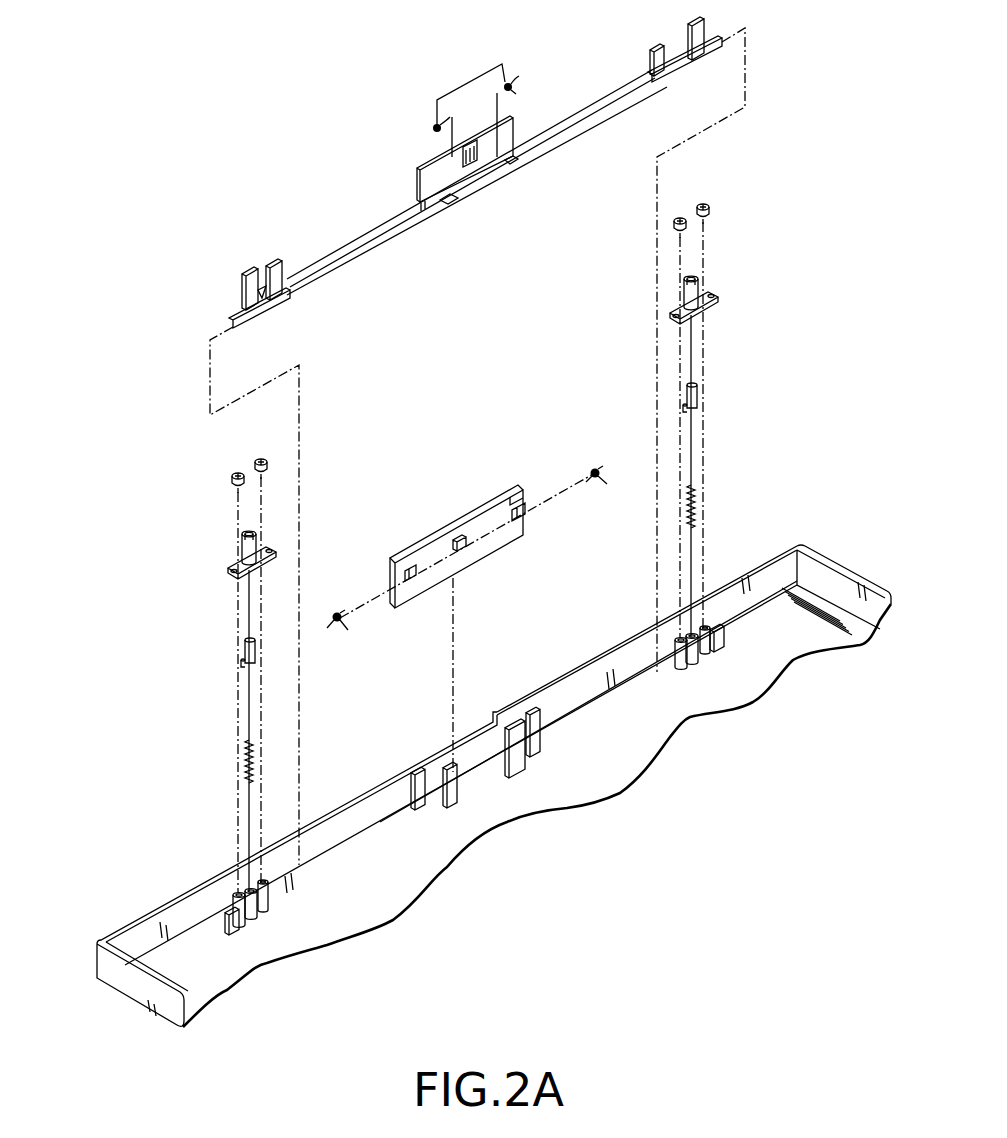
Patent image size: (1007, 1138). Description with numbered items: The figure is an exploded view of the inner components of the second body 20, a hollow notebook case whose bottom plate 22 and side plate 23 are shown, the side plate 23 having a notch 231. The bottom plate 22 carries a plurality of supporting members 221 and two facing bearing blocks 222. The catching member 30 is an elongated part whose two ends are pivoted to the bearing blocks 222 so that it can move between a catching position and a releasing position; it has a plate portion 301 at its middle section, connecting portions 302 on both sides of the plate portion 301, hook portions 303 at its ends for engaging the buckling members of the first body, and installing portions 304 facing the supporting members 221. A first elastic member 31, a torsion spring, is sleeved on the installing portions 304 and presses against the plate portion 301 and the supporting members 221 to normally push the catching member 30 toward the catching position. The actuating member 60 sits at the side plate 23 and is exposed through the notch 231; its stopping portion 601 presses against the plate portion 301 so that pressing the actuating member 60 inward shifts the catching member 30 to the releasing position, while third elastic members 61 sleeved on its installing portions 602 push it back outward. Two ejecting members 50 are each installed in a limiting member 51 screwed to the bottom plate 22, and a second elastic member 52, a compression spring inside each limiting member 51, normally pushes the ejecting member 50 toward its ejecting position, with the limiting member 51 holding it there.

The second body 20 is at (143, 1015).
The bottom plate 22 is at (332, 929).
The side plate 23 is at (158, 914).
The supporting members 221 is at (421, 806).
The bearing blocks 222 is at (229, 920).
The notch 231 is at (432, 758).
The catching member 30 is at (623, 81).
The plate portion 301 is at (433, 172).
The connecting portions 302 is at (349, 240).
The hook portions 303 is at (255, 277).
The installing portions 304 is at (513, 158).
The first elastic member 31 is at (470, 80).
The ejecting member 50 is at (241, 645).
The limiting member 51 is at (227, 557).
The second elastic member 52 is at (243, 761).
The actuating member 60 is at (458, 509).
The stopping portion 601 is at (468, 548).
The installing portions 602 is at (413, 581).
The third elastic member 61 is at (336, 612).